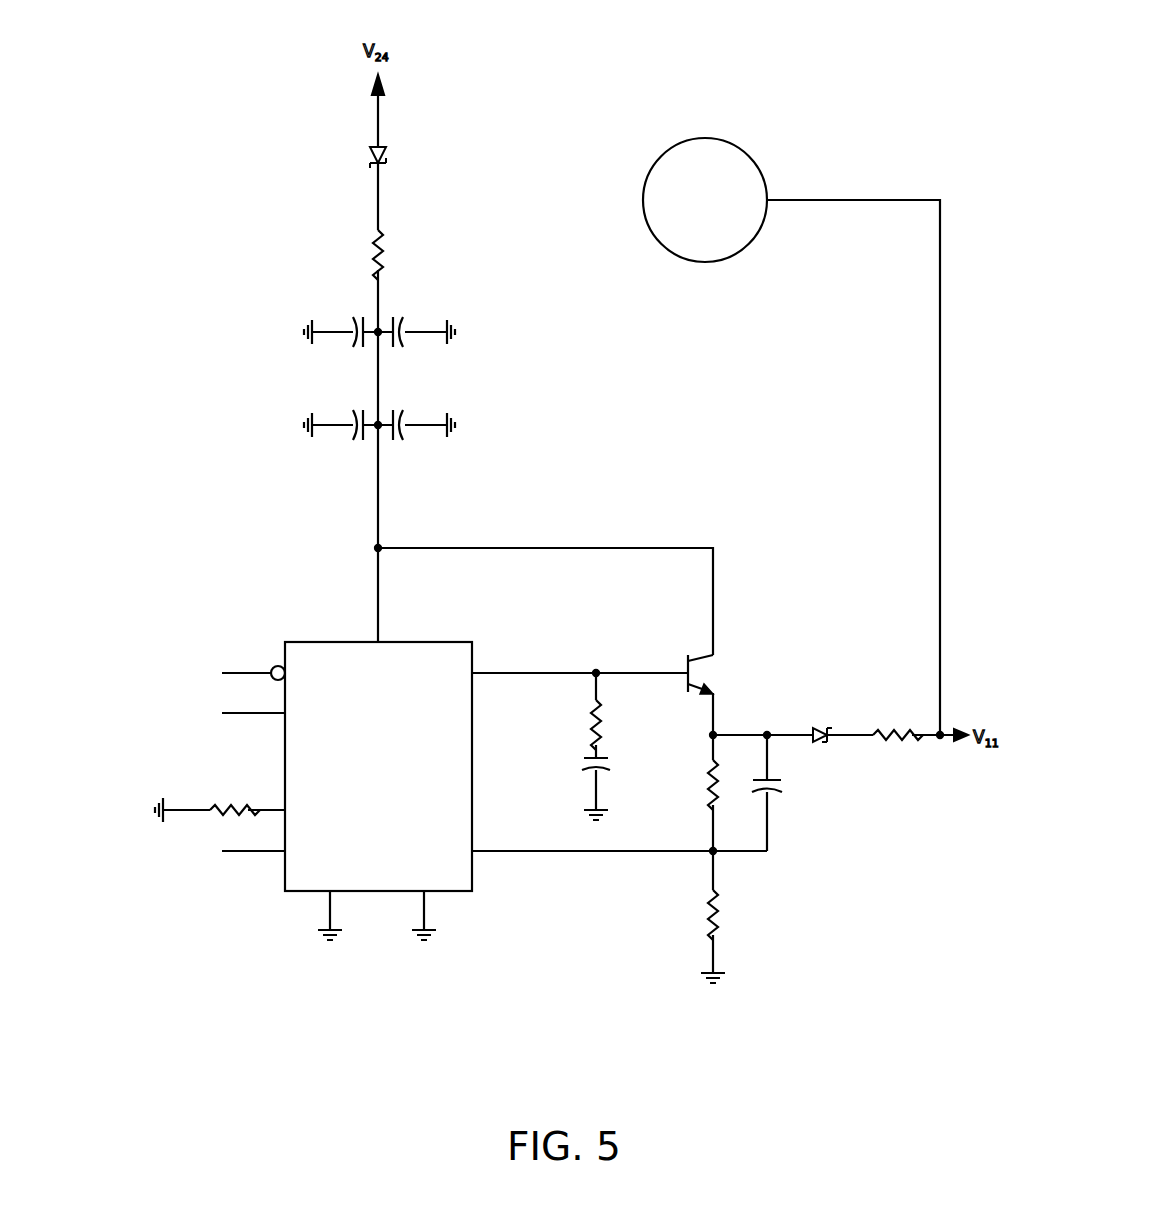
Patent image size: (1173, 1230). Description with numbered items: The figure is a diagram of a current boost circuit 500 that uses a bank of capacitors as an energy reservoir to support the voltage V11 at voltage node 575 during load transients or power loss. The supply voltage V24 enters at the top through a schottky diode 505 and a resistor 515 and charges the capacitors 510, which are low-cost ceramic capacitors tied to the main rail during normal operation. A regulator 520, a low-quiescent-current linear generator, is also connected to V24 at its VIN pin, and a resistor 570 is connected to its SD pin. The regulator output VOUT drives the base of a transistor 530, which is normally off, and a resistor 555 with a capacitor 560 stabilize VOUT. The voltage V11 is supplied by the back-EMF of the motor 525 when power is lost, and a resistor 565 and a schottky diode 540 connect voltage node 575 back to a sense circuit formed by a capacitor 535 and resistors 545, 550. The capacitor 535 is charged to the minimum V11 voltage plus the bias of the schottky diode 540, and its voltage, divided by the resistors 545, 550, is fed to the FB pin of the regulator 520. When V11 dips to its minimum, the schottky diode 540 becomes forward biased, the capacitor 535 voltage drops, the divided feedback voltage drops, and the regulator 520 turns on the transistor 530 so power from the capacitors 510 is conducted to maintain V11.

The current boost circuit 500 is at (892, 74).
The schottky diode 505 is at (385, 156).
The capacitors 510 is at (352, 321).
The resistor 515 is at (386, 250).
The regulator 520 is at (342, 642).
The motor 525 is at (741, 255).
The transistor 530 is at (686, 665).
The capacitor 535 is at (777, 792).
The schottky diode 540 is at (824, 733).
The resistor 545 is at (710, 793).
The resistor 550 is at (710, 896).
The resistor 555 is at (595, 724).
The capacitor 560 is at (600, 759).
The resistor 565 is at (909, 742).
The resistor 570 is at (222, 806).
The voltage node 575 is at (938, 734).